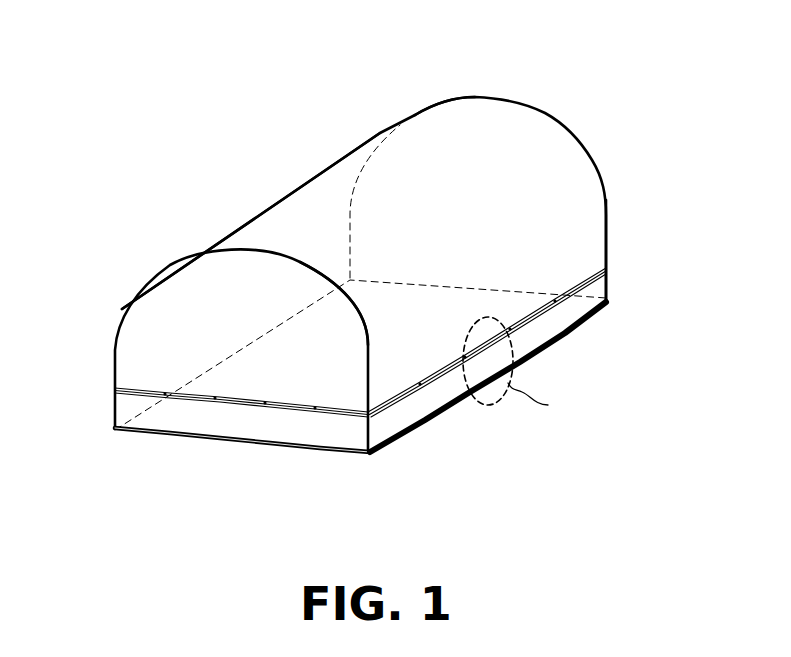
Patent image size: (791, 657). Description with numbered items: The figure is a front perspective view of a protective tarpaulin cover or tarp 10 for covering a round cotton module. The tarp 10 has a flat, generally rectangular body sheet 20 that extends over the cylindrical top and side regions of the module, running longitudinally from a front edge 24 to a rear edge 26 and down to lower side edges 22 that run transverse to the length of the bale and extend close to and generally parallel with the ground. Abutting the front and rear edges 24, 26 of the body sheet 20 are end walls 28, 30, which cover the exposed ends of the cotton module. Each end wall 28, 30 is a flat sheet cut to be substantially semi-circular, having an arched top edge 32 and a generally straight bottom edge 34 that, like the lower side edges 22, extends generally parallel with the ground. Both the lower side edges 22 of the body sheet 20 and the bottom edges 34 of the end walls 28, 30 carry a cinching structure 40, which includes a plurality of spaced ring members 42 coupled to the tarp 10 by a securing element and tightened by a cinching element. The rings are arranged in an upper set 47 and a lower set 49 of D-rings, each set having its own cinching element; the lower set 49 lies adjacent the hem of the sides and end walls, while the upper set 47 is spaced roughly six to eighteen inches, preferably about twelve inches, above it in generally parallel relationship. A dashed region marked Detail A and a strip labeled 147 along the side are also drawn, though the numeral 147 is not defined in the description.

The tarp 10 is at (361, 278).
The body sheet 20 is at (277, 212).
The lower side edges 22 is at (554, 338).
The front edge 24 is at (305, 256).
The rear edge 26 is at (513, 101).
The end wall 28 is at (218, 325).
The end wall 30 is at (586, 168).
The arched top edge 32 is at (463, 97).
The bottom edge 34 is at (367, 406).
The cinching structure 40 is at (118, 393).
The ring members 42 is at (369, 408).
The upper set of D-rings 47 is at (158, 398).
The lower set of D-rings 49 is at (155, 432).
The side upper strip 147 is at (390, 410).